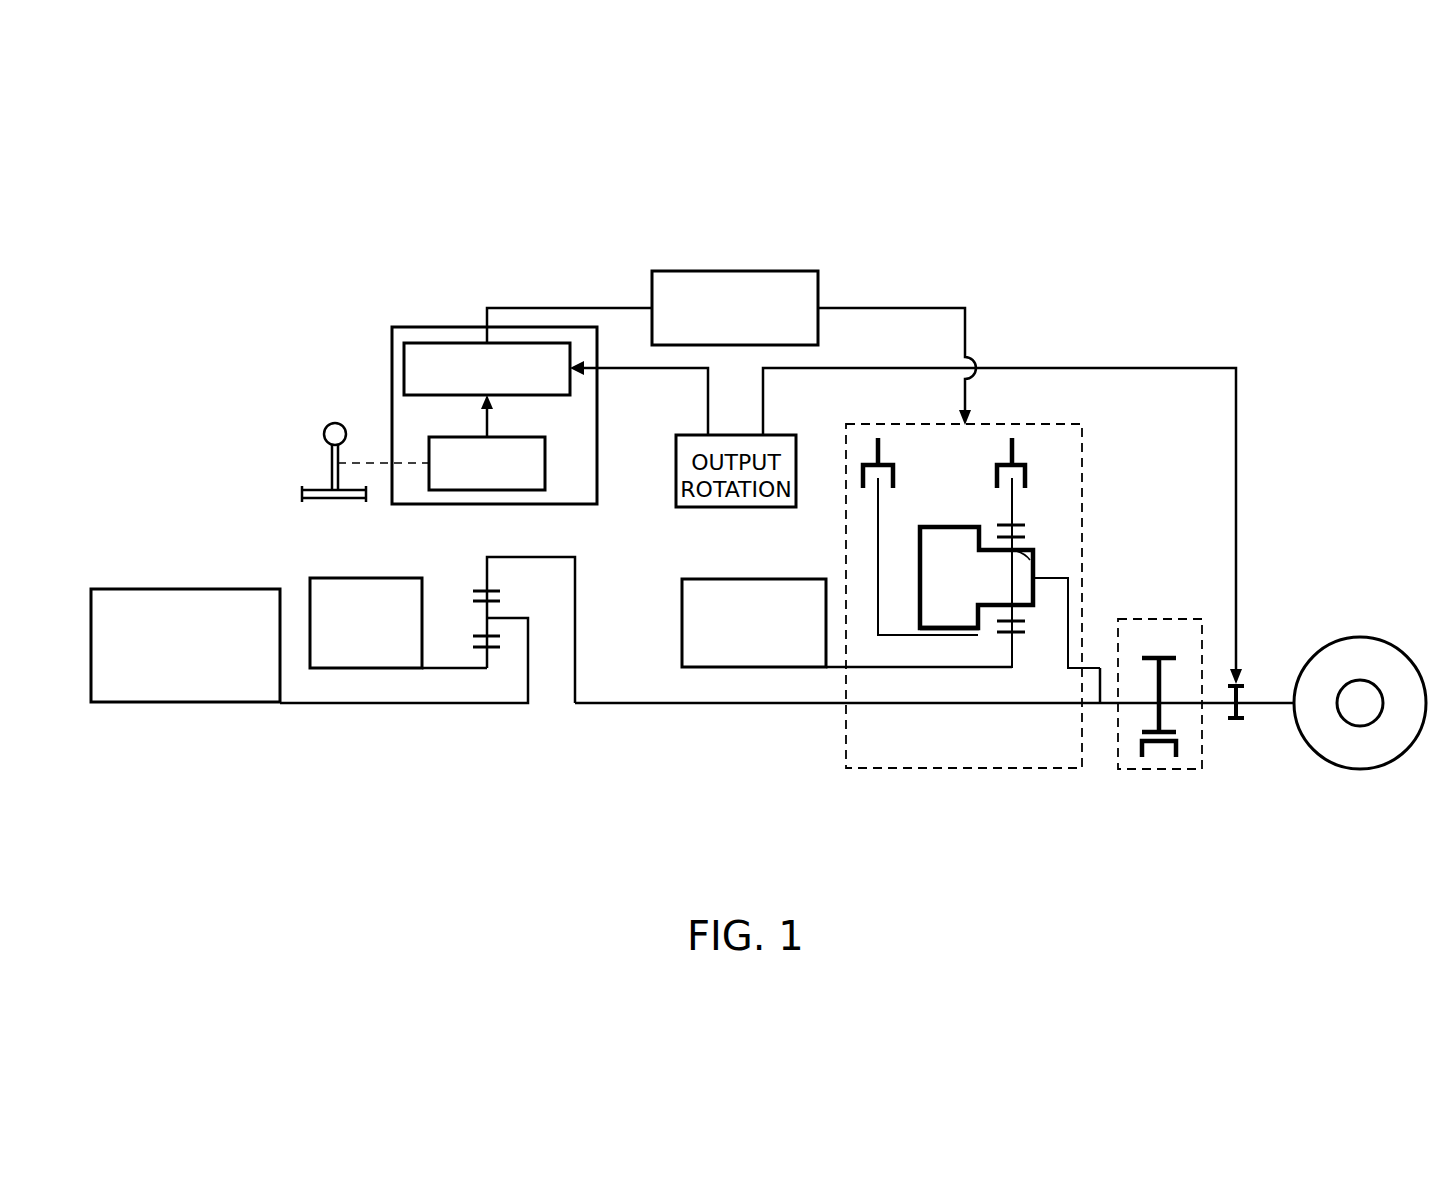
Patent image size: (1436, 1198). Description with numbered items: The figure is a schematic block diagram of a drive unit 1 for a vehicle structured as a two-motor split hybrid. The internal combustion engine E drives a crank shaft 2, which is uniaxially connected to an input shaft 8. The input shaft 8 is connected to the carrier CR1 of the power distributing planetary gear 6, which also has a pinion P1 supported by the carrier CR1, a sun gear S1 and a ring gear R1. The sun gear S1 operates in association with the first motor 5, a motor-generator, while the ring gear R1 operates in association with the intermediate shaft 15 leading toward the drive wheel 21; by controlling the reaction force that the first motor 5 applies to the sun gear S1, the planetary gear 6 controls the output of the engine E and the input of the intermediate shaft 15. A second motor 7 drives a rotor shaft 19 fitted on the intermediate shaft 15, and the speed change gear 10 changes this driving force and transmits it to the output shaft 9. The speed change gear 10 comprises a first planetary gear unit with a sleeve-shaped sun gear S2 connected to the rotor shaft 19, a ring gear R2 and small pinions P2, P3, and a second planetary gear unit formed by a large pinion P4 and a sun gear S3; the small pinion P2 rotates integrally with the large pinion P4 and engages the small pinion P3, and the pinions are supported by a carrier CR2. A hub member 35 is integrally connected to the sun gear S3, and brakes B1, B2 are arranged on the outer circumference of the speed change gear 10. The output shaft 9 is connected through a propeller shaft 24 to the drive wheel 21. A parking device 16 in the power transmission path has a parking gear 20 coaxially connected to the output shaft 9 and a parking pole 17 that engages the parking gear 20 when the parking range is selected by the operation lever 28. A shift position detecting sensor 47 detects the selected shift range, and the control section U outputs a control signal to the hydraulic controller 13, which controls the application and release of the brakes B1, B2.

The drive unit 1 is at (1057, 262).
The internal combustion engine E is at (119, 589).
The crank shaft 2 is at (300, 705).
The first motor 5 is at (358, 578).
The power distributing planetary gear 6 is at (496, 614).
The ring gear R1 is at (490, 590).
The pinion P1 is at (487, 605).
The carrier CR1 is at (490, 612).
The sun gear S1 is at (490, 648).
The second motor 7 is at (682, 600).
The input shaft 8 is at (466, 705).
The intermediate shaft 15 is at (755, 705).
The rotor shaft 19 is at (838, 669).
The speed change gear 10 is at (976, 593).
The brake B1 is at (893, 471).
The brake B2 is at (997, 470).
The hub member 35 is at (877, 512).
The large pinion P4 is at (950, 527).
The ring gear R2 is at (1025, 525).
The small pinion P3 is at (1025, 537).
The small pinion P2 is at (1033, 556).
The sun gear S3 is at (935, 637).
The sun gear S2 is at (1012, 650).
The carrier CR2 is at (1068, 597).
The output shaft 9 is at (1110, 705).
The parking device 16 is at (1173, 653).
The parking gear 20 is at (1161, 680).
The parking pole 17 is at (1160, 747).
The propeller shaft 24 is at (1270, 705).
The drive wheel 21 is at (1357, 640).
The hydraulic controller 13 is at (668, 271).
The control section U is at (494, 389).
The shift position detecting sensor 47 is at (545, 463).
The operation lever 28 is at (323, 432).